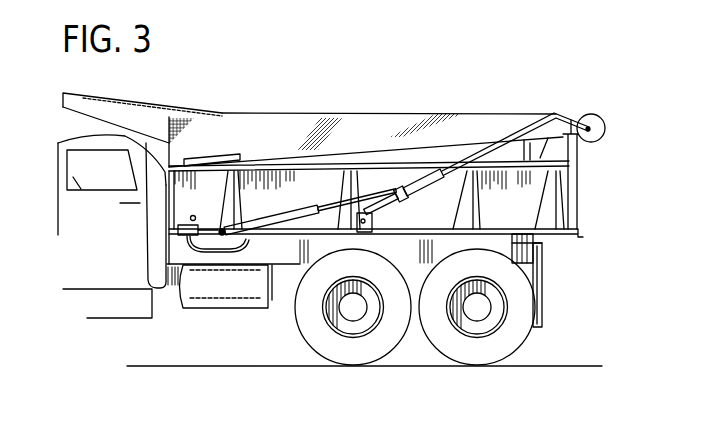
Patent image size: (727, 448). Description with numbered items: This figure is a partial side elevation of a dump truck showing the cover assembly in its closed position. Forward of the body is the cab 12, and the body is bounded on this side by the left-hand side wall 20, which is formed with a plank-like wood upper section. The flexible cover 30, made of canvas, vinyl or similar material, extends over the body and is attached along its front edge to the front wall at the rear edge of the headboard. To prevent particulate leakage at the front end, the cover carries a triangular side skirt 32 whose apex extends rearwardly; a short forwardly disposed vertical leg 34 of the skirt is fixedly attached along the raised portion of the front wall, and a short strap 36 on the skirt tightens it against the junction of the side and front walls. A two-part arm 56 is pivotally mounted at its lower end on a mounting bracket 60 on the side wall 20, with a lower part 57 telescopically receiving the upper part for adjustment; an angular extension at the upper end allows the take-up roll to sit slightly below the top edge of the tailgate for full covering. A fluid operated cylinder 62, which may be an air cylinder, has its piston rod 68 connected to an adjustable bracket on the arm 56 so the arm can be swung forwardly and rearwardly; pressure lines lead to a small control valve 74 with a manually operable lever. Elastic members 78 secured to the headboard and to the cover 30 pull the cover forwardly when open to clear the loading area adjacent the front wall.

The cab 12 is at (107, 241).
The left-hand side wall 20 is at (527, 206).
The flexible cover 30 is at (413, 112).
The side skirt 32 is at (284, 137).
The leg of triangular skirt 34 is at (168, 139).
The strap 36 is at (226, 153).
The first arm 56 is at (512, 136).
The lower part of arm 57 is at (424, 189).
The mounting bracket 60 is at (569, 113).
The fluid operated cylinder 62 is at (304, 206).
The cylinder piston rod 68 is at (363, 206).
The control valve 74 is at (183, 222).
The elastic member 78 is at (155, 105).